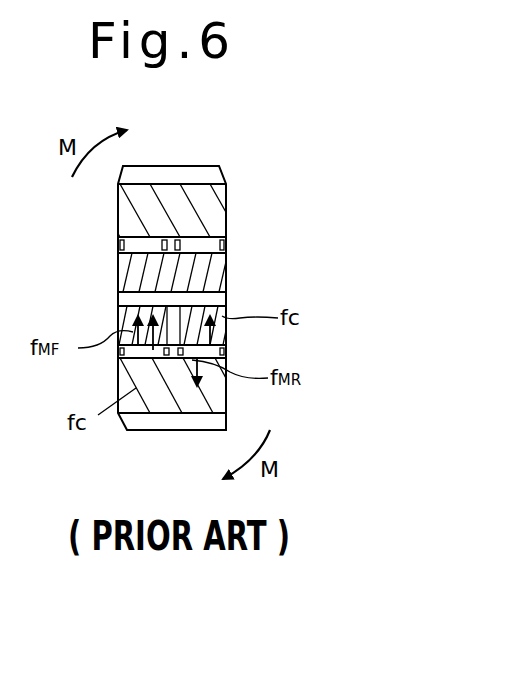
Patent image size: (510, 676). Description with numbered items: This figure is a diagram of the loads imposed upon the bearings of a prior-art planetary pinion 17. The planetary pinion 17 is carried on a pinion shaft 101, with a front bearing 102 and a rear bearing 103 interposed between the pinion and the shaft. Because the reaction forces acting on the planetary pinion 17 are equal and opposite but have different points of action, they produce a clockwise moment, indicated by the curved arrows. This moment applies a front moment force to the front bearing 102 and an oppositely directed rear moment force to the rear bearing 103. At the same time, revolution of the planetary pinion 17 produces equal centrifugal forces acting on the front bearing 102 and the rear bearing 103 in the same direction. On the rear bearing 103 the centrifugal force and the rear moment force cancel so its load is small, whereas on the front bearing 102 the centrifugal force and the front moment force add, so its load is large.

The planetary pinion 17 is at (210, 219).
The pinion shaft 101 is at (210, 277).
The front bearing 102 is at (150, 347).
The rear bearing 103 is at (187, 362).